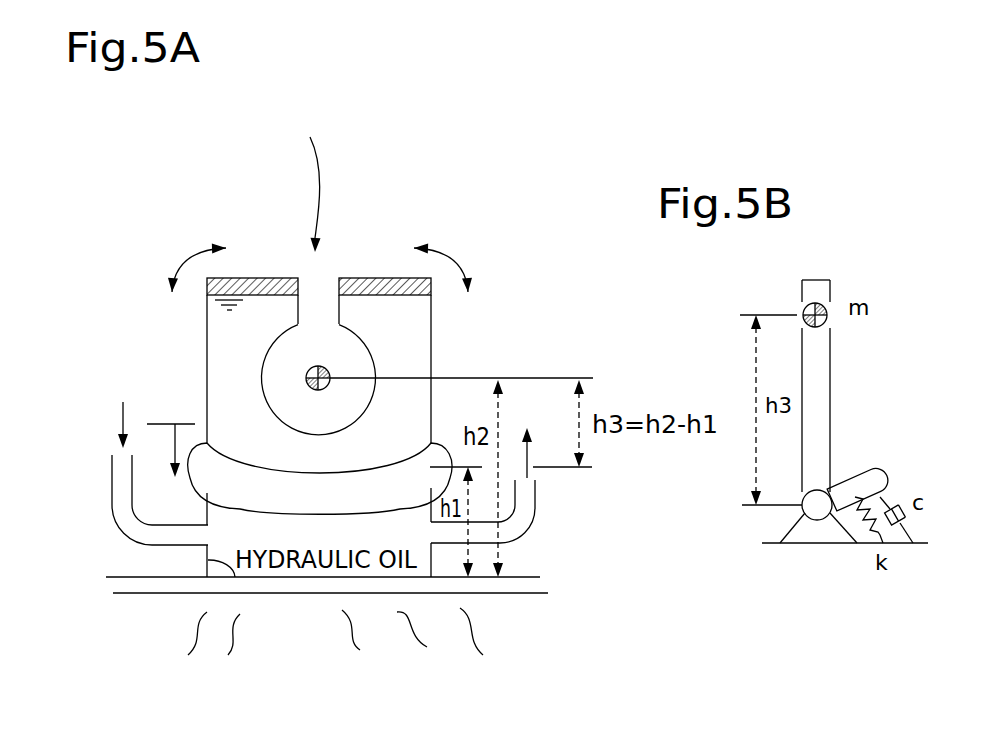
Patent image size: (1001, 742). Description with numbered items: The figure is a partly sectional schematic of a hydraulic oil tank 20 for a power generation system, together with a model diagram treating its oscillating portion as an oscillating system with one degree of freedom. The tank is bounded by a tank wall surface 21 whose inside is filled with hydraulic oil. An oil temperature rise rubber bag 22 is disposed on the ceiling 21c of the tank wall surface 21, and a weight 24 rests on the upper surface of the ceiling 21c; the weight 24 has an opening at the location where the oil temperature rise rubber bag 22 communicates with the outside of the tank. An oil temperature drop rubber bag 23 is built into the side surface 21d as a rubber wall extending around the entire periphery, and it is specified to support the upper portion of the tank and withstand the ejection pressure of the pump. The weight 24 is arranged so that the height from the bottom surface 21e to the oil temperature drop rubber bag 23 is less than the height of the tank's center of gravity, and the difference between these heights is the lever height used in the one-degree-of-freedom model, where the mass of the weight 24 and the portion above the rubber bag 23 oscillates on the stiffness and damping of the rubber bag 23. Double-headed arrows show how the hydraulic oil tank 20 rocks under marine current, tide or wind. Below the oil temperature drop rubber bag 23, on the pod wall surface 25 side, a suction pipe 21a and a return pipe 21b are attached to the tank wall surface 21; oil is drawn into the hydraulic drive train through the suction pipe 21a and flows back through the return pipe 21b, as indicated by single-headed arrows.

The hydraulic oil tank 20 is at (320, 199).
The tank wall surface 21 is at (435, 312).
The suction pipe 21a is at (527, 502).
The return pipe 21b is at (122, 494).
The ceiling 21c is at (262, 279).
The side surface 21d is at (432, 400).
The bottom surface 21e is at (208, 558).
The oil temperature rise rubber bag 22 is at (265, 346).
The oil temperature drop rubber bag 23 is at (237, 482).
The weight 24 is at (368, 279).
The pod wall surface 25 is at (150, 588).